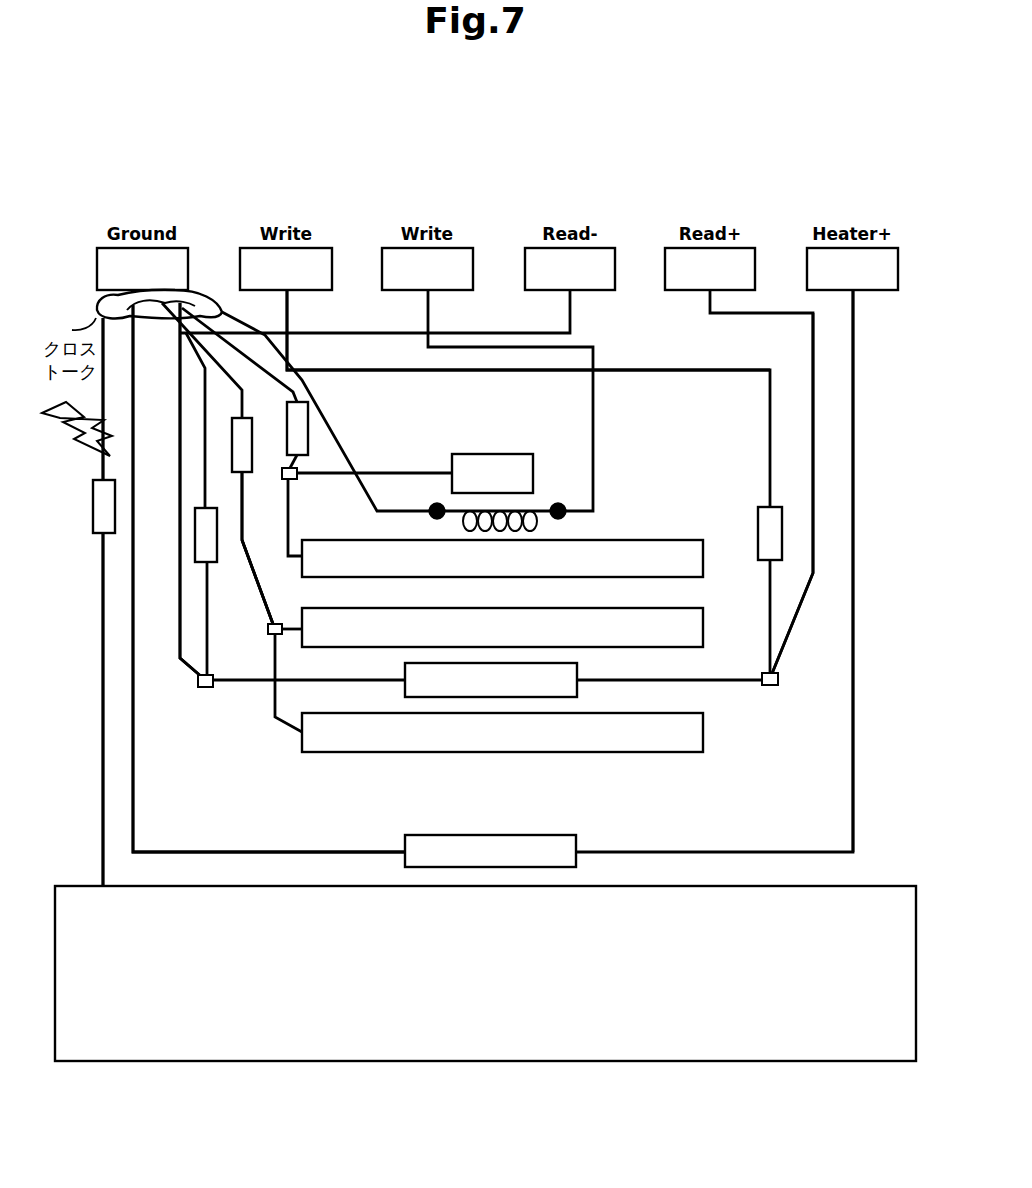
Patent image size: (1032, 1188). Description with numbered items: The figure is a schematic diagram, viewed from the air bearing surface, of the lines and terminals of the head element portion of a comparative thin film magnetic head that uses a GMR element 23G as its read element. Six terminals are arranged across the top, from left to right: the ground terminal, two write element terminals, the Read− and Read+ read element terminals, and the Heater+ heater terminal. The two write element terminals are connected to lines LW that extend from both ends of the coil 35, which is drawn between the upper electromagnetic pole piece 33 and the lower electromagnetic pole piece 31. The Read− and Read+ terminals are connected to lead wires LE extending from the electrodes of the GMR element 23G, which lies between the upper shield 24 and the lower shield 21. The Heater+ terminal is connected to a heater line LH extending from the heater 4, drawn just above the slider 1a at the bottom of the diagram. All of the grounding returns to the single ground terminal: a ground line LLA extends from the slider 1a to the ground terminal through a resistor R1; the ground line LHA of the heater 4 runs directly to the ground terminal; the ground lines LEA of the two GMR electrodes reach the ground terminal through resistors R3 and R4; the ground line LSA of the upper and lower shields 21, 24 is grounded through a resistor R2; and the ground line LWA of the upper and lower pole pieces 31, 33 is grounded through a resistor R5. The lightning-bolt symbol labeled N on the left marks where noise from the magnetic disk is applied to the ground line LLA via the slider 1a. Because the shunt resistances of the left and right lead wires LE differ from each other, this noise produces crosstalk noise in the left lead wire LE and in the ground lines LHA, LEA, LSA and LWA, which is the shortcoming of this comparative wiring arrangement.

The resistor R1 is at (93, 500).
The resistor R2 is at (252, 462).
The resistor R3 is at (218, 565).
The resistor R4 is at (758, 530).
The resistor R5 is at (287, 427).
The noise N is at (103, 425).
The ground line LLA is at (103, 638).
The lead wire LE is at (180, 555).
The ground line LEA is at (208, 672).
The line LW is at (311, 410).
The ground line LWA is at (298, 478).
The ground line LSA is at (248, 558).
The heater line LH is at (853, 728).
The ground line LHA is at (133, 820).
The upper electromagnetic pole piece 33 is at (512, 470).
The coil 35 is at (542, 526).
The lower electromagnetic pole piece 31 is at (642, 558).
The upper shield 24 is at (642, 628).
The GMR element 23G is at (578, 665).
The lower shield 21 is at (642, 733).
The heater 4 is at (557, 852).
The slider 1a is at (871, 888).